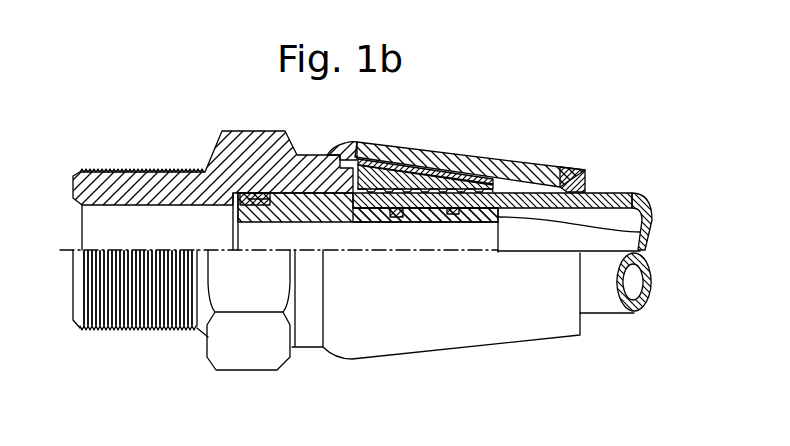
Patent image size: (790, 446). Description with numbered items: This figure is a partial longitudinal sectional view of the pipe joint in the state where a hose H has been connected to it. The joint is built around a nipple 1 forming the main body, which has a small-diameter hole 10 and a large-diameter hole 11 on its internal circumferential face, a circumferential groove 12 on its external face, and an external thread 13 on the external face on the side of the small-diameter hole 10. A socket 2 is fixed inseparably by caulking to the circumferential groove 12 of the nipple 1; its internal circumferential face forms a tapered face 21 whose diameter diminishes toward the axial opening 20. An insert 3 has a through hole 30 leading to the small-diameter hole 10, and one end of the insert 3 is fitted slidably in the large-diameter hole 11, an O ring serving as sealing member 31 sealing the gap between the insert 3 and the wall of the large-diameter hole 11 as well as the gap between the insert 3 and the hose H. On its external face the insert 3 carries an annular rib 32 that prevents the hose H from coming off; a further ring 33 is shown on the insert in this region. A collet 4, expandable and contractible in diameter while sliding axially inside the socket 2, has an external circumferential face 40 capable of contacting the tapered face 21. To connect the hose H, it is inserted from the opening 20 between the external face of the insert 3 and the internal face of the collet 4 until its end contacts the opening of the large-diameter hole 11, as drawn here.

The nipple 1 is at (230, 130).
The small-diameter hole 10 is at (97, 206).
The large-diameter hole 11 is at (275, 162).
The circumferential groove 12 is at (357, 157).
The external thread 13 is at (104, 171).
The socket 2 is at (540, 160).
The opening 20 is at (583, 192).
The tapered face 21 is at (570, 172).
The insert 3 is at (645, 228).
The through hole 30 is at (303, 224).
The sealing member 31 is at (210, 172).
The annular rib 32 is at (393, 223).
The intermediate ring 33 is at (403, 223).
The collet 4 is at (428, 170).
The external circumferential face 40 is at (483, 167).
The hose H is at (600, 300).